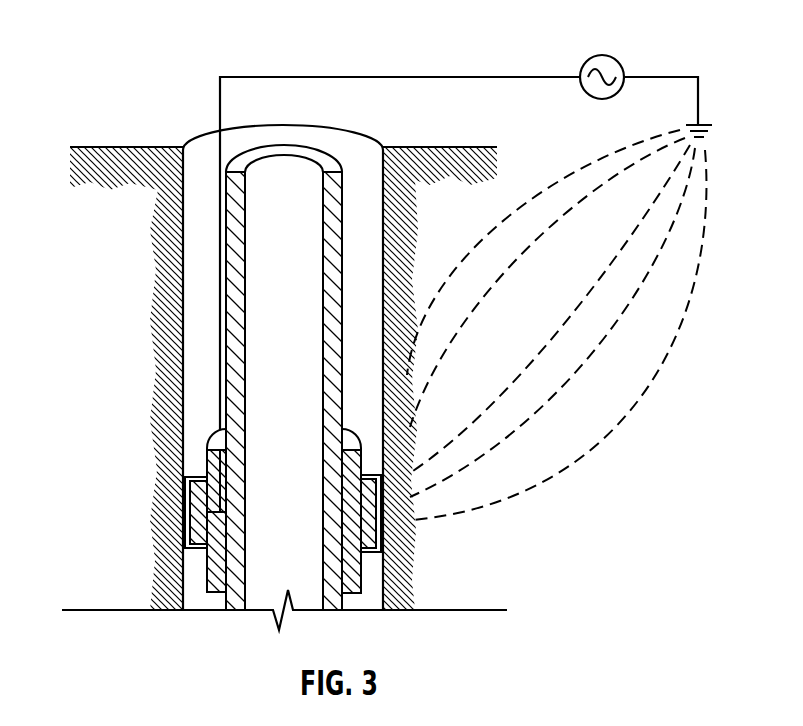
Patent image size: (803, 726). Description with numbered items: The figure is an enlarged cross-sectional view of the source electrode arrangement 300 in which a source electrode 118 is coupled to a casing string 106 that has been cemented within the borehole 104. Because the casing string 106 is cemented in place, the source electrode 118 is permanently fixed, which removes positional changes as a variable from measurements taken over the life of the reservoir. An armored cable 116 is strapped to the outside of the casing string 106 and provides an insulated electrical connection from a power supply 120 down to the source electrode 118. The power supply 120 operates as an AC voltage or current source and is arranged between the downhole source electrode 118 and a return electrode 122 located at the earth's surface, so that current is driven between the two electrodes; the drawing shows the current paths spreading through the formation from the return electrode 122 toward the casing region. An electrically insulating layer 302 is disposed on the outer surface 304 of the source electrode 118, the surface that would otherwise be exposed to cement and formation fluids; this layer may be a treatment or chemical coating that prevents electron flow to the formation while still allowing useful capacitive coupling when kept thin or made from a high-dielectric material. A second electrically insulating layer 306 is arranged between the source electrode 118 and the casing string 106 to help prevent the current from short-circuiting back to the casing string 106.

The downhole electrical system 300 is at (110, 44).
The borehole 104 is at (180, 247).
The casing string 106 is at (235, 343).
The armored cable 116 is at (220, 400).
The source electrode 118 is at (197, 483).
The power supply 120 is at (602, 54).
The return electrode 122 is at (705, 124).
The electrically insulating layer 302 is at (185, 518).
The outer surface 304 is at (192, 490).
The second electrically insulating layer 306 is at (217, 572).